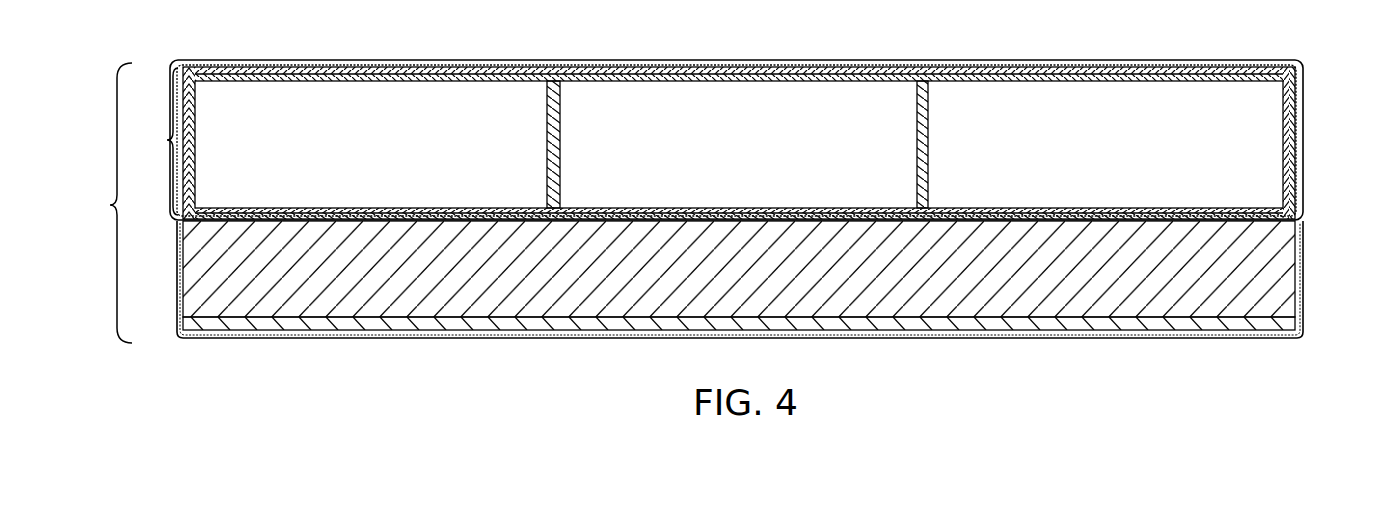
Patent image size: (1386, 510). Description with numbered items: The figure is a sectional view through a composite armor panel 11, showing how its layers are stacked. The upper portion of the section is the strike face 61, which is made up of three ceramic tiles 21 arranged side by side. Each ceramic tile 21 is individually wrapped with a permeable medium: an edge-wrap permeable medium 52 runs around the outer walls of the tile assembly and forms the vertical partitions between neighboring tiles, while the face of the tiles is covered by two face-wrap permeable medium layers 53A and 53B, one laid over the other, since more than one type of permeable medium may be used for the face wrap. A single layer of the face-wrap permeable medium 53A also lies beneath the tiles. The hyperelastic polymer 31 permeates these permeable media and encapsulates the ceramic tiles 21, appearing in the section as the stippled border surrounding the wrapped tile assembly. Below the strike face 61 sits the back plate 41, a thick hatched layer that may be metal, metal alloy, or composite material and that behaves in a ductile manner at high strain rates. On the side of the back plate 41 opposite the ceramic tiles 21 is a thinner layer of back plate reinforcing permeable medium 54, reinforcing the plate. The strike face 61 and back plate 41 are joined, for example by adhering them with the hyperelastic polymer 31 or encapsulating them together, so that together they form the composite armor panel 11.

The composite armor panel 11 is at (108, 203).
The strike face 61 is at (152, 141).
The hyperelastic polymer 31 is at (1302, 100).
The edge-wrap permeable medium 52 is at (196, 132).
The face-wrap permeable medium 53A is at (477, 73).
The face-wrap permeable medium 53B is at (603, 80).
The ceramic tile 21 is at (368, 159).
The back plate 41 is at (1289, 268).
The back plate reinforcing permeable medium 54 is at (1101, 327).